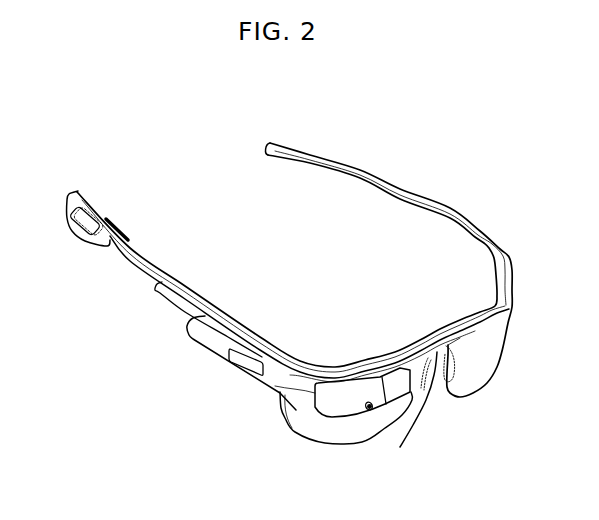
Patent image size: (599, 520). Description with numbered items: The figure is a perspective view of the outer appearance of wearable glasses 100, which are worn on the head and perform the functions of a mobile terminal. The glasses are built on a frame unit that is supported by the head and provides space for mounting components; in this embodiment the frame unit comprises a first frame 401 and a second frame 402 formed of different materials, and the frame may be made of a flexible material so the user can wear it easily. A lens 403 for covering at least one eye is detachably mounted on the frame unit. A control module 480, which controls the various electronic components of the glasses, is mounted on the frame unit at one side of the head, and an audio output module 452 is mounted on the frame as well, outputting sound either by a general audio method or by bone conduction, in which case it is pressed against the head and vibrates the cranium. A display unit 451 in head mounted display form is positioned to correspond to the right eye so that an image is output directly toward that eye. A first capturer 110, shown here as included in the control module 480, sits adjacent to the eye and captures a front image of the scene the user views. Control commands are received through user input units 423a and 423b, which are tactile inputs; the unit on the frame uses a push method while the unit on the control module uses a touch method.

The wearable glasses 100 is at (373, 136).
The first capturer 110 is at (373, 411).
The first frame 401 is at (403, 188).
The second frame 402 is at (146, 256).
The lens 403 is at (488, 337).
The user input unit 423a is at (112, 230).
The user input unit 423b is at (246, 365).
The display unit 451 is at (394, 389).
The audio output module 452 is at (78, 228).
The control module 480 is at (203, 335).